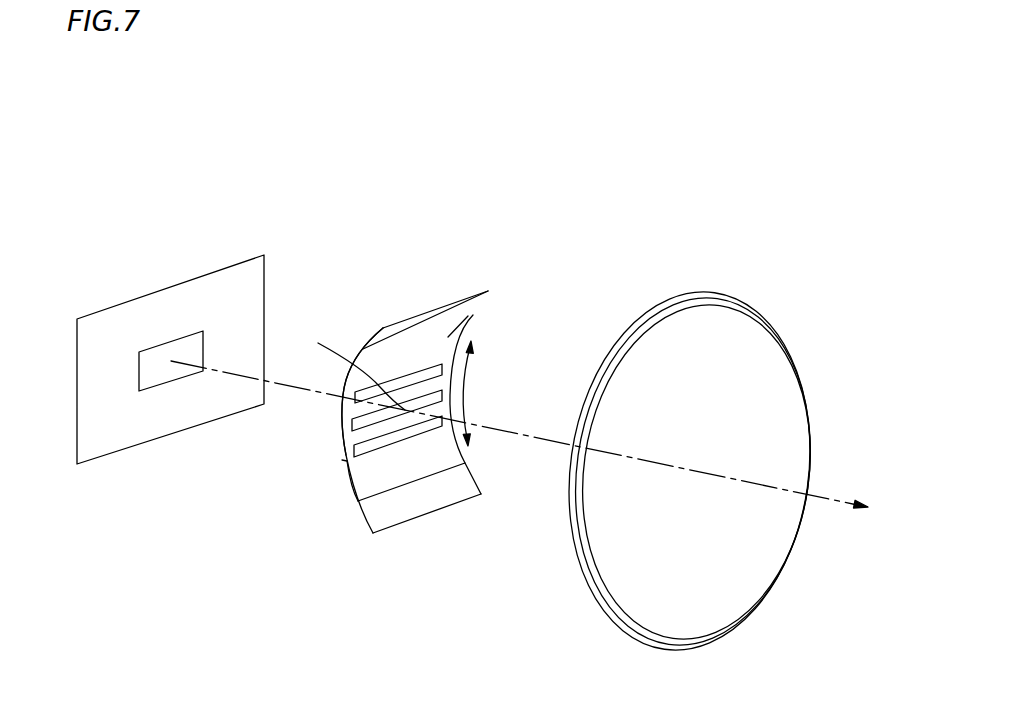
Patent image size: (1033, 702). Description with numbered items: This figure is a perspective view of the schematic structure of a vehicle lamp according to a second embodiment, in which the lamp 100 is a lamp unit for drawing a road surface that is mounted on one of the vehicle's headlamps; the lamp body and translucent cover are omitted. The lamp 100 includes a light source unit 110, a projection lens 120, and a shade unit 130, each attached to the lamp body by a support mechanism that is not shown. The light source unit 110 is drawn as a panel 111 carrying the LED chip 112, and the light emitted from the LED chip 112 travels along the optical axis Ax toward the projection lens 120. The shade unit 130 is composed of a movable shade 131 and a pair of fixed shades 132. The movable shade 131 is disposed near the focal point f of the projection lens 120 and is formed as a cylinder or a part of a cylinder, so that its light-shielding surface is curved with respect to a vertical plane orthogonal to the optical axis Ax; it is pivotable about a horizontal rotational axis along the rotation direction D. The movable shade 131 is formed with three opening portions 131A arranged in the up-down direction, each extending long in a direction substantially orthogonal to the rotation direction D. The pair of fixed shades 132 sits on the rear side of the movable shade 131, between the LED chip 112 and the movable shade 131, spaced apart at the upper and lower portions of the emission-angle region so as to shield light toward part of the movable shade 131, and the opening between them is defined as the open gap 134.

The lamp 100 is at (350, 157).
The light source unit 110 is at (170, 330).
The display panel 111 is at (243, 271).
The LED chip 112 is at (158, 387).
The projection lens 120 is at (780, 327).
The shade unit 130 is at (400, 370).
The movable shade 131 is at (404, 395).
The opening portions 131A is at (353, 426).
The fixed shades 132 is at (442, 307).
The open gap 134 is at (345, 389).